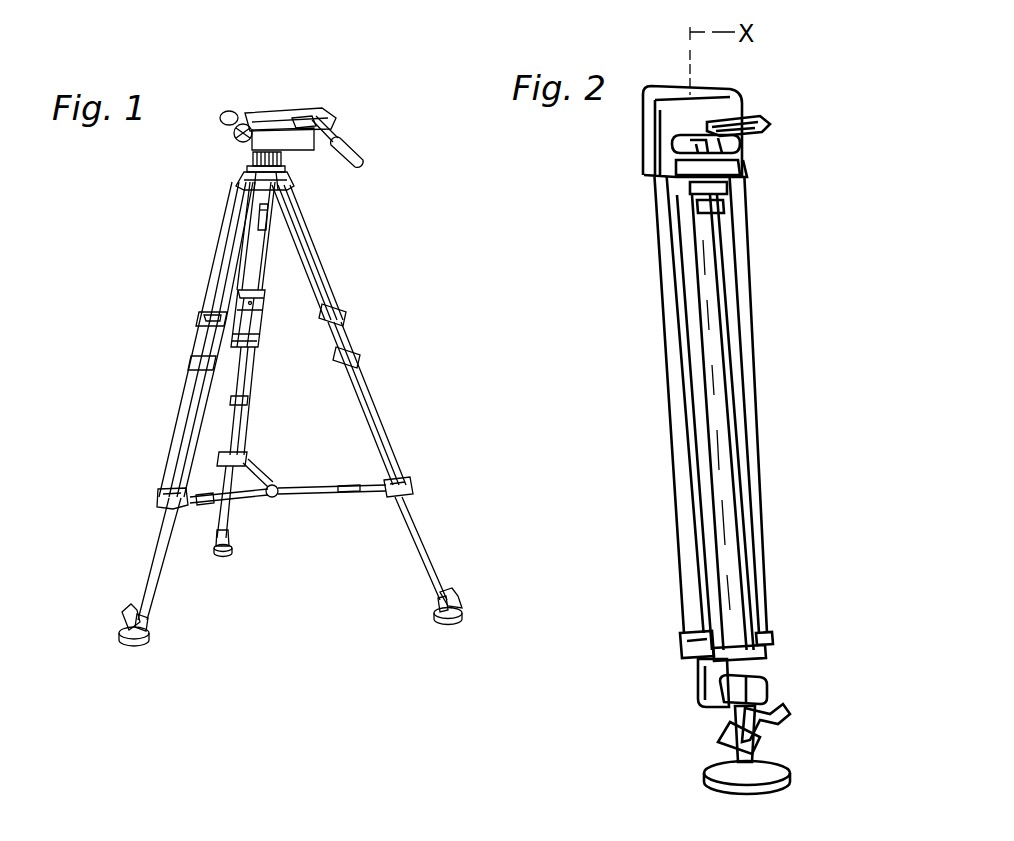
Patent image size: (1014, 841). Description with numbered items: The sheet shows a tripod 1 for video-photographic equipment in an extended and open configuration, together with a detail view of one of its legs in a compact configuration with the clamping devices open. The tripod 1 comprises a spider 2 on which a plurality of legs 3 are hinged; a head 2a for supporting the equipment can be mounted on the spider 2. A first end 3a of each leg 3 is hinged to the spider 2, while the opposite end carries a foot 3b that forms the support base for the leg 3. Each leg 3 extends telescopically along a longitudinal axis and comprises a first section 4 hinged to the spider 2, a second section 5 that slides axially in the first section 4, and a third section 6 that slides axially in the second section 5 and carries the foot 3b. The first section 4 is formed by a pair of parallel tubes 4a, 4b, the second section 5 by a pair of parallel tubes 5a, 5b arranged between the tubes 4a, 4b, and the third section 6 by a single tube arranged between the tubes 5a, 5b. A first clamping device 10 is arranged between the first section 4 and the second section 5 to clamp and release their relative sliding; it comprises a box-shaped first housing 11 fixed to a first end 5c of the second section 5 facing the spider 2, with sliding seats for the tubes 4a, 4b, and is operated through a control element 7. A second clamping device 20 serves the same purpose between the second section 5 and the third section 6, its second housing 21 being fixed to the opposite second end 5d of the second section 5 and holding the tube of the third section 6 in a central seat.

In FIG. 1, the tripod 1 is at (115, 234).
In FIG. 1, the spider 2 is at (241, 173).
In FIG. 1, the head 2a is at (299, 110).
In FIG. 1, the leg 3 is at (247, 403).
In FIG. 2, the leg 3 is at (830, 135).
In FIG. 1, the first end 3a is at (238, 184).
In FIG. 1, the foot 3b is at (118, 636).
In FIG. 2, the foot 3b is at (782, 768).
In FIG. 1, the first section 4 is at (205, 258).
In FIG. 2, the tube 4a is at (660, 242).
In FIG. 2, the tube 4b is at (750, 242).
In FIG. 1, the second section 5 is at (177, 392).
In FIG. 2, the tube 5a is at (697, 290).
In FIG. 2, the tube 5b is at (727, 276).
In FIG. 2, the first end 5c is at (662, 192).
In FIG. 2, the second end 5d is at (680, 656).
In FIG. 1, the third section 6 is at (150, 554).
In FIG. 2, the third section 6 is at (715, 326).
In FIG. 2, the control element 7 is at (745, 118).
In FIG. 1, the first clamping device 10 is at (202, 318).
In FIG. 2, the first clamping device 10 is at (748, 162).
In FIG. 2, the first housing 11 is at (660, 156).
In FIG. 1, the second clamping device 20 is at (160, 495).
In FIG. 2, the second clamping device 20 is at (756, 685).
In FIG. 2, the second housing 21 is at (700, 698).